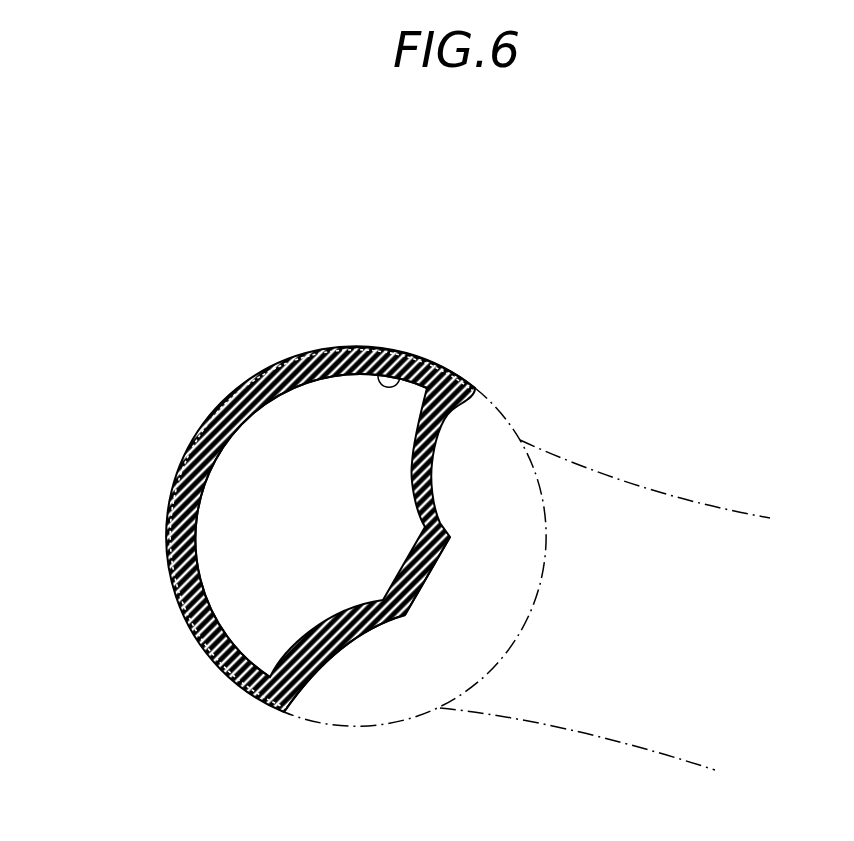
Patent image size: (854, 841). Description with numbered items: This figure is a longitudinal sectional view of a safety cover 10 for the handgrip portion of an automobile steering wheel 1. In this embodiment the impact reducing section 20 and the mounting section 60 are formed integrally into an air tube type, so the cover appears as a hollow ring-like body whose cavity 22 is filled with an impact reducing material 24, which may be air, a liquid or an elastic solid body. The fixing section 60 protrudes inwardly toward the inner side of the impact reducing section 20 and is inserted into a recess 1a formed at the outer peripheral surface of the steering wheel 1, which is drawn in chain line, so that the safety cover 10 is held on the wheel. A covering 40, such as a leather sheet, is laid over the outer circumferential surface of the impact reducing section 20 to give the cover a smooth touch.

The steering wheel 1 is at (497, 437).
The recess 1a is at (420, 592).
The safety cover 10 is at (269, 511).
The impact reducing section 20 is at (177, 600).
The cavity 22 is at (408, 347).
The impact reducing material 24 is at (263, 612).
The covering 40 is at (172, 475).
The mounting section 60 is at (410, 593).